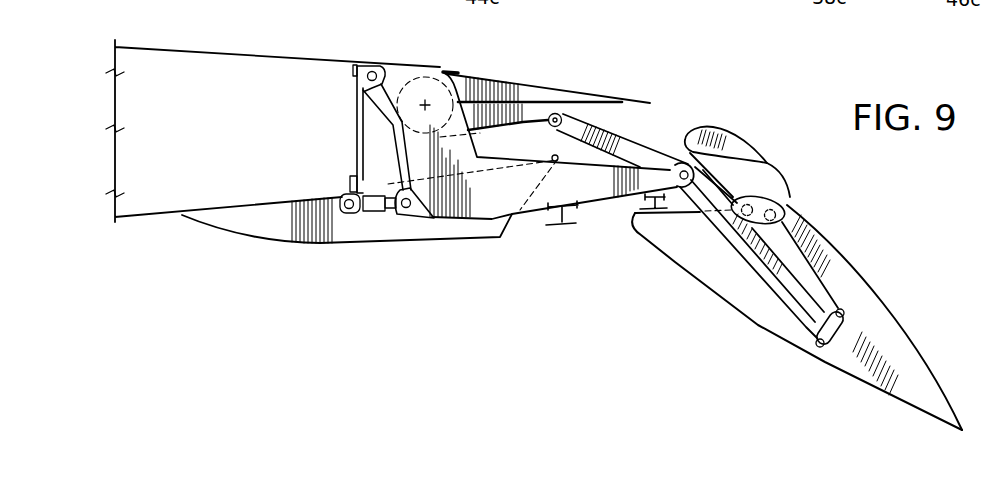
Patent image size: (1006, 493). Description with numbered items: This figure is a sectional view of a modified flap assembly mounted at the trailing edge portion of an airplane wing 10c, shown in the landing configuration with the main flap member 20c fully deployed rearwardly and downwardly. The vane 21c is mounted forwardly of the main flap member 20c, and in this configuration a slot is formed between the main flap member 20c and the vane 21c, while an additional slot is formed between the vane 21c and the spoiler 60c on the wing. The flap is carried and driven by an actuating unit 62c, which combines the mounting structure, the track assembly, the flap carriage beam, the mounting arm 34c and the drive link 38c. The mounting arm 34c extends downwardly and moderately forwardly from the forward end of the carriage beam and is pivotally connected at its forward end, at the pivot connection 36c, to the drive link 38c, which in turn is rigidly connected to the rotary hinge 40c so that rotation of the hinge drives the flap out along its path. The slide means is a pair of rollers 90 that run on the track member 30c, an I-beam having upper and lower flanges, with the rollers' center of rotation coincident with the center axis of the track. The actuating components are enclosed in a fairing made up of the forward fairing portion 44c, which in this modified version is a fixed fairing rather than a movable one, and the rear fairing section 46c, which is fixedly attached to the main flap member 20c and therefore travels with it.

The airplane wing 10c is at (298, 48).
The rotary hinge 40c is at (424, 101).
The drive link 38c is at (510, 108).
The spoiler 60c is at (534, 90).
The pivot connection 36c is at (558, 114).
The mounting arm 34c is at (612, 137).
The rollers 90 is at (684, 168).
The vane 21c is at (772, 162).
The main flap member 20c is at (858, 270).
The rear fairing section 46c is at (684, 268).
The track member 30c is at (782, 282).
The actuating unit 62c is at (600, 216).
The forward fairing portion 44c is at (364, 246).